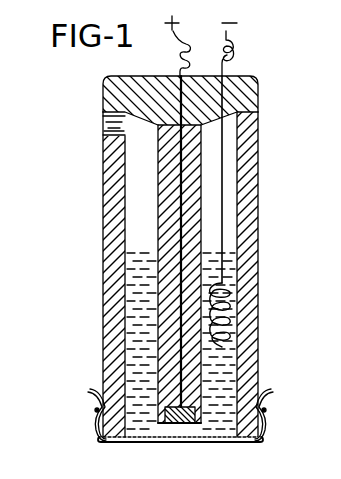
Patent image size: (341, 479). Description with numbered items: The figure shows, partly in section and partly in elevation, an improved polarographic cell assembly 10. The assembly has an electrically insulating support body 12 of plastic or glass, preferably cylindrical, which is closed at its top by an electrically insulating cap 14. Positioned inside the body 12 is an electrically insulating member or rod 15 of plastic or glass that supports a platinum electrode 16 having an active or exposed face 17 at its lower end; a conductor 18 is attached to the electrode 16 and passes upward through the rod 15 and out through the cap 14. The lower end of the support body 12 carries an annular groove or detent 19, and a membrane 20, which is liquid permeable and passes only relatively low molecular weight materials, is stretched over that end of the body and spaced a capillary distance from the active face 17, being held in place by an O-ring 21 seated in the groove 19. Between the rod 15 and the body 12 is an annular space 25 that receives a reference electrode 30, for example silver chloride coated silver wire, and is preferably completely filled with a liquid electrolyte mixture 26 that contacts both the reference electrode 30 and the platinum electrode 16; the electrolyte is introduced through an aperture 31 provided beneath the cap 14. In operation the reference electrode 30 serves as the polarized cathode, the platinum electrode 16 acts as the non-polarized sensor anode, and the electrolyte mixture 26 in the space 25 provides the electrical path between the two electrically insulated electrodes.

The cell assembly 10 is at (103, 158).
The support body 12 is at (248, 190).
The cap 14 is at (248, 95).
The rod 15 is at (163, 193).
The platinum electrode 16 is at (184, 426).
The active face 17 is at (180, 424).
The conductor 18 is at (180, 218).
The annular groove 19 is at (105, 442).
The membrane 20 is at (242, 441).
The O-ring 21 is at (263, 413).
The annular space 25 is at (230, 237).
The electrolyte mixture 26 is at (140, 313).
The reference electrode 30 is at (222, 138).
The aperture 31 is at (103, 128).